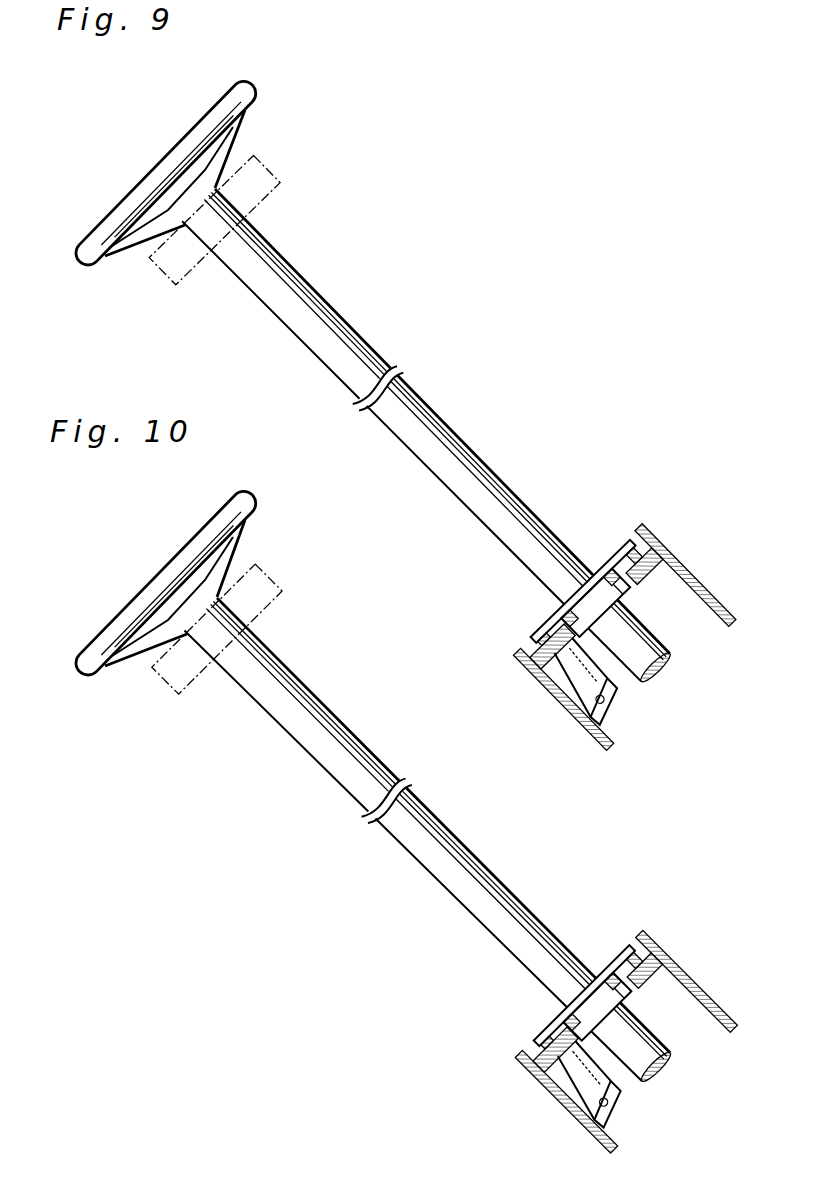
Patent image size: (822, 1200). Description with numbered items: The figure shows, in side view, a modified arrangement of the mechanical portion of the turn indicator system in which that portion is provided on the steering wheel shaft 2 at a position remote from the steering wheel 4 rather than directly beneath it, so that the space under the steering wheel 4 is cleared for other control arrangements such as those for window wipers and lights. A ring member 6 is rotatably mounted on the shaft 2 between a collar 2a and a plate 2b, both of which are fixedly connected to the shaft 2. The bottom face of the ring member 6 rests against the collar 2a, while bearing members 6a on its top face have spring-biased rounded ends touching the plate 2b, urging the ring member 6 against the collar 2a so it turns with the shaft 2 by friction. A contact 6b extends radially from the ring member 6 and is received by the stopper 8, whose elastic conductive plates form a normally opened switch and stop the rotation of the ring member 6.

In FIG. 9, the steering wheel shaft 2 is at (315, 299).
In FIG. 10, the steering wheel shaft 2 is at (308, 705).
In FIG. 9, the collar 2a is at (628, 595).
In FIG. 10, the collar 2a is at (627, 993).
In FIG. 9, the plate 2b is at (600, 570).
In FIG. 10, the plate 2b is at (607, 977).
In FIG. 9, the steering wheel 4 is at (198, 142).
In FIG. 10, the steering wheel 4 is at (212, 534).
In FIG. 9, the ring member 6 is at (652, 548).
In FIG. 10, the ring member 6 is at (652, 955).
In FIG. 9, the bearing members 6a is at (643, 532).
In FIG. 10, the bearing members 6a is at (643, 940).
In FIG. 9, the contact 6b is at (543, 645).
In FIG. 10, the contact 6b is at (543, 1053).
In FIG. 9, the stopper 8 is at (570, 686).
In FIG. 10, the stopper 8 is at (565, 1067).